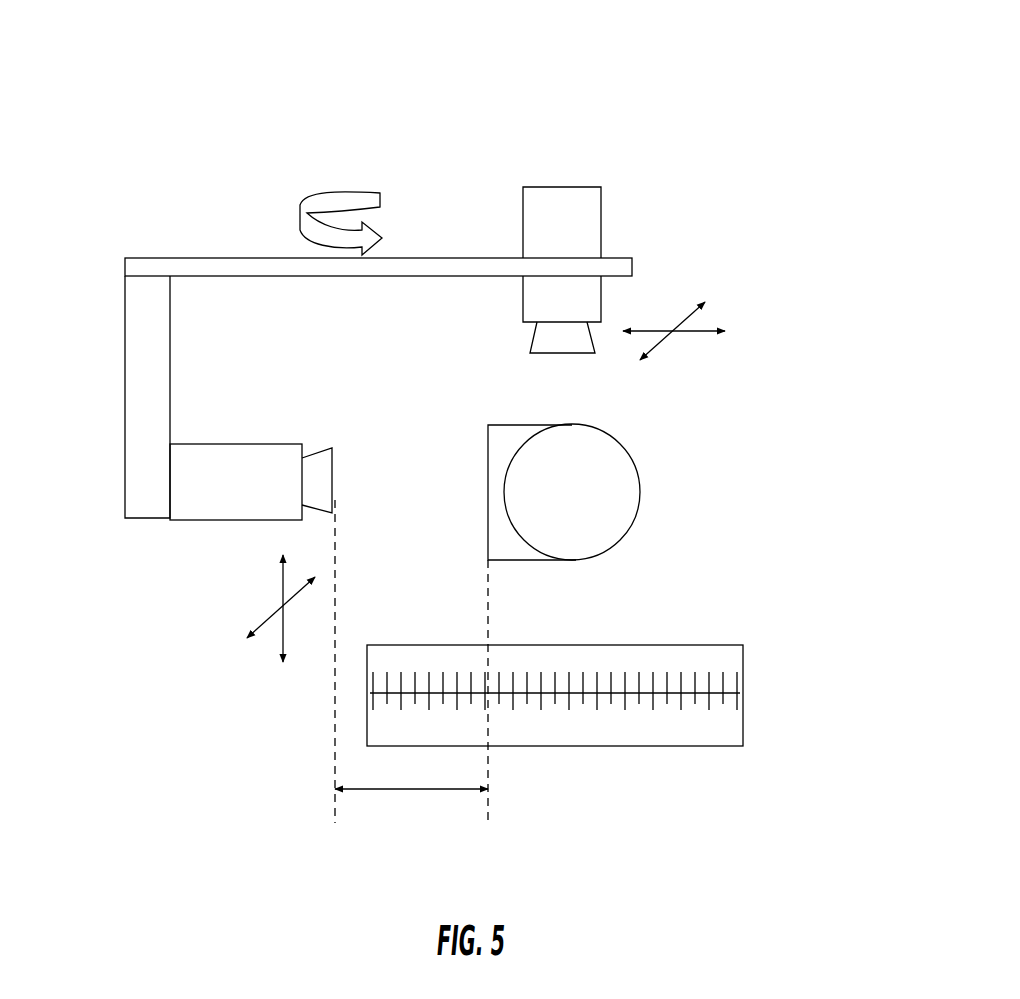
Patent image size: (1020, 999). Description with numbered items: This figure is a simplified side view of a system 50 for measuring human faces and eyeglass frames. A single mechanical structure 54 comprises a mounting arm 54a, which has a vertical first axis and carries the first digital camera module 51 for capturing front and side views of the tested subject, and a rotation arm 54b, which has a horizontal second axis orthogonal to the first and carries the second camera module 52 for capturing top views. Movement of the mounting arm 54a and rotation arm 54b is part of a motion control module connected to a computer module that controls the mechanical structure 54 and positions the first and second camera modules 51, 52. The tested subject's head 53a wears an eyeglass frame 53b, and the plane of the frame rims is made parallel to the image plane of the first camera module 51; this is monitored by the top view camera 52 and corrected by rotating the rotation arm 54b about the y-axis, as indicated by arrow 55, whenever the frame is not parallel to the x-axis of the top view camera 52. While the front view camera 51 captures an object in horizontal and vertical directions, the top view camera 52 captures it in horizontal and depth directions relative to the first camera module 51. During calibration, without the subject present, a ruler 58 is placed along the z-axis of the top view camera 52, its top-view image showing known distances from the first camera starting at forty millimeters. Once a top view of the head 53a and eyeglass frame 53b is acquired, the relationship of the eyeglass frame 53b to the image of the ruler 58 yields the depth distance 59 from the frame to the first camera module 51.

The system 50 is at (236, 94).
The first digital camera module 51 is at (232, 444).
The second camera module 52 is at (602, 213).
The patient's head 53a is at (528, 545).
The eyeglass frame 53b is at (488, 540).
The mechanical structure 54 is at (123, 155).
The mounting arm 54a is at (125, 310).
The rotation arm 54b is at (195, 258).
The arrow 55 is at (380, 200).
The ruler 58 is at (743, 712).
The depth distance 59 is at (383, 791).